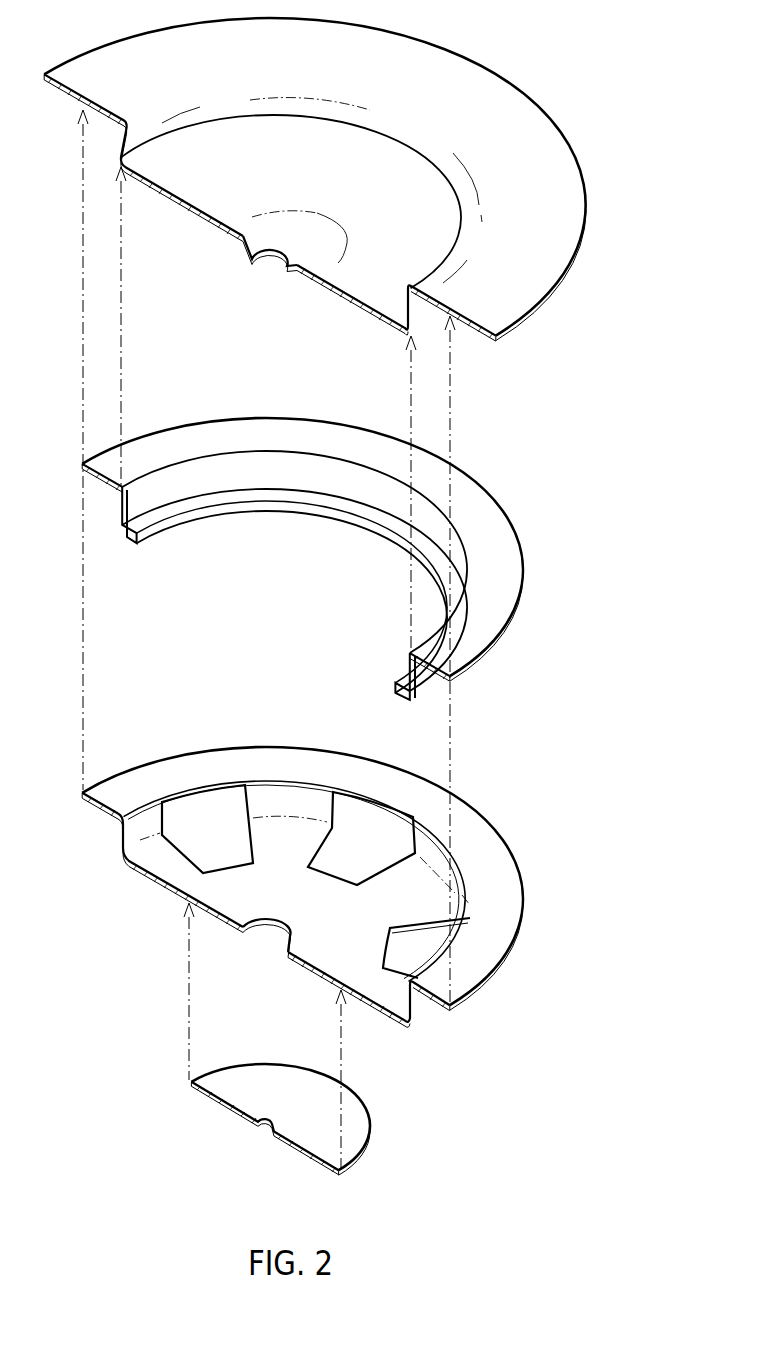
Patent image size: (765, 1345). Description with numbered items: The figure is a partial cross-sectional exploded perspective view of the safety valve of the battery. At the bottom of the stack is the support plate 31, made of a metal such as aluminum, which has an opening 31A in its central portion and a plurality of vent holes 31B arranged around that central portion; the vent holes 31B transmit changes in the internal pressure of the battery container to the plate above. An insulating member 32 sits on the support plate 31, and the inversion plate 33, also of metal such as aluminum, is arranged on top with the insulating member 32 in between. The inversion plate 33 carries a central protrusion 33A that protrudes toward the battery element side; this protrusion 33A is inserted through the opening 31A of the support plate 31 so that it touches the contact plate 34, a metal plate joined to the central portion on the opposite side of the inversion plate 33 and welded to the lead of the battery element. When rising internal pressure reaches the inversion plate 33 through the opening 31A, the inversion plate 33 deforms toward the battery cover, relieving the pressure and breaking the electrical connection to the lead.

The support plate 31 is at (512, 898).
The opening 31A is at (252, 932).
The vent hole 31B is at (213, 813).
The insulating member 32 is at (513, 563).
The inversion plate 33 is at (567, 210).
The protrusion 33A is at (257, 284).
The contact plate 34 is at (357, 1117).